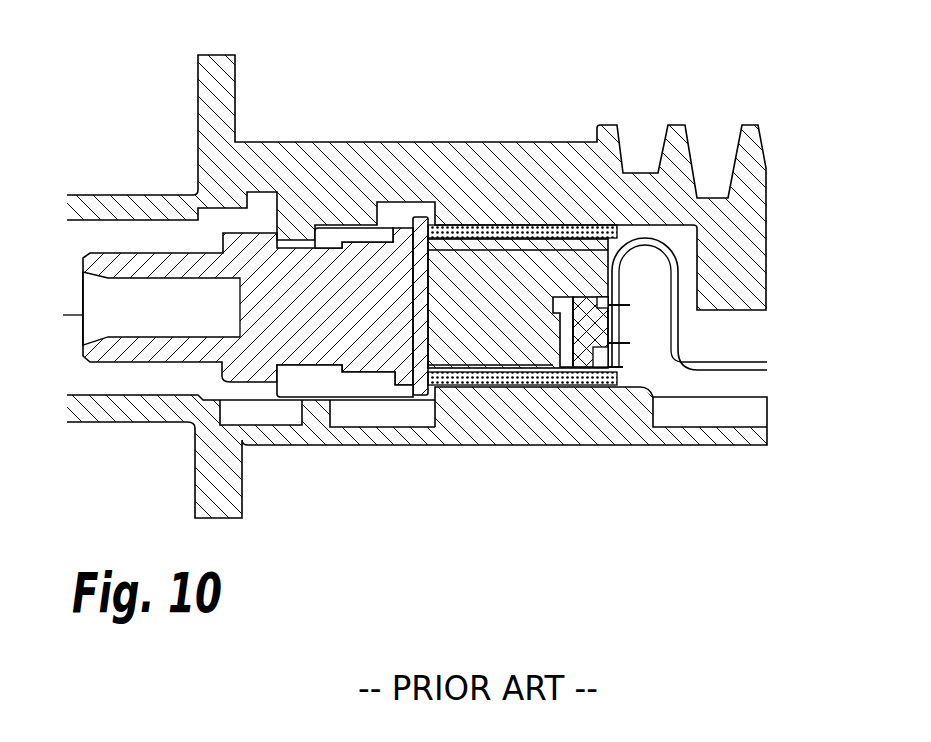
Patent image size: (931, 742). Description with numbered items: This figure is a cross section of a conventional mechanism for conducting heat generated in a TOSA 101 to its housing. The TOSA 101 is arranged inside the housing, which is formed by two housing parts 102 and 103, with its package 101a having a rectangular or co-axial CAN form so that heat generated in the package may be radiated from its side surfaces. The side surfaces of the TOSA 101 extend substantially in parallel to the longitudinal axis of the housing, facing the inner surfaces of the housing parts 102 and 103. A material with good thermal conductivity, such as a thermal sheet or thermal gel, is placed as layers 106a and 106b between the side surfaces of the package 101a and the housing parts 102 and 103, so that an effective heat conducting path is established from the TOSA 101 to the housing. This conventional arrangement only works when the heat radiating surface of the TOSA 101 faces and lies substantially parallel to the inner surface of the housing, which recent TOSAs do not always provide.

The TOSA 101 is at (388, 378).
The package 101a is at (482, 342).
The housing 102 is at (528, 157).
The housing 103 is at (672, 433).
The material with good thermal conductivity 106a is at (482, 225).
The material with good thermal conductivity 106b is at (445, 385).